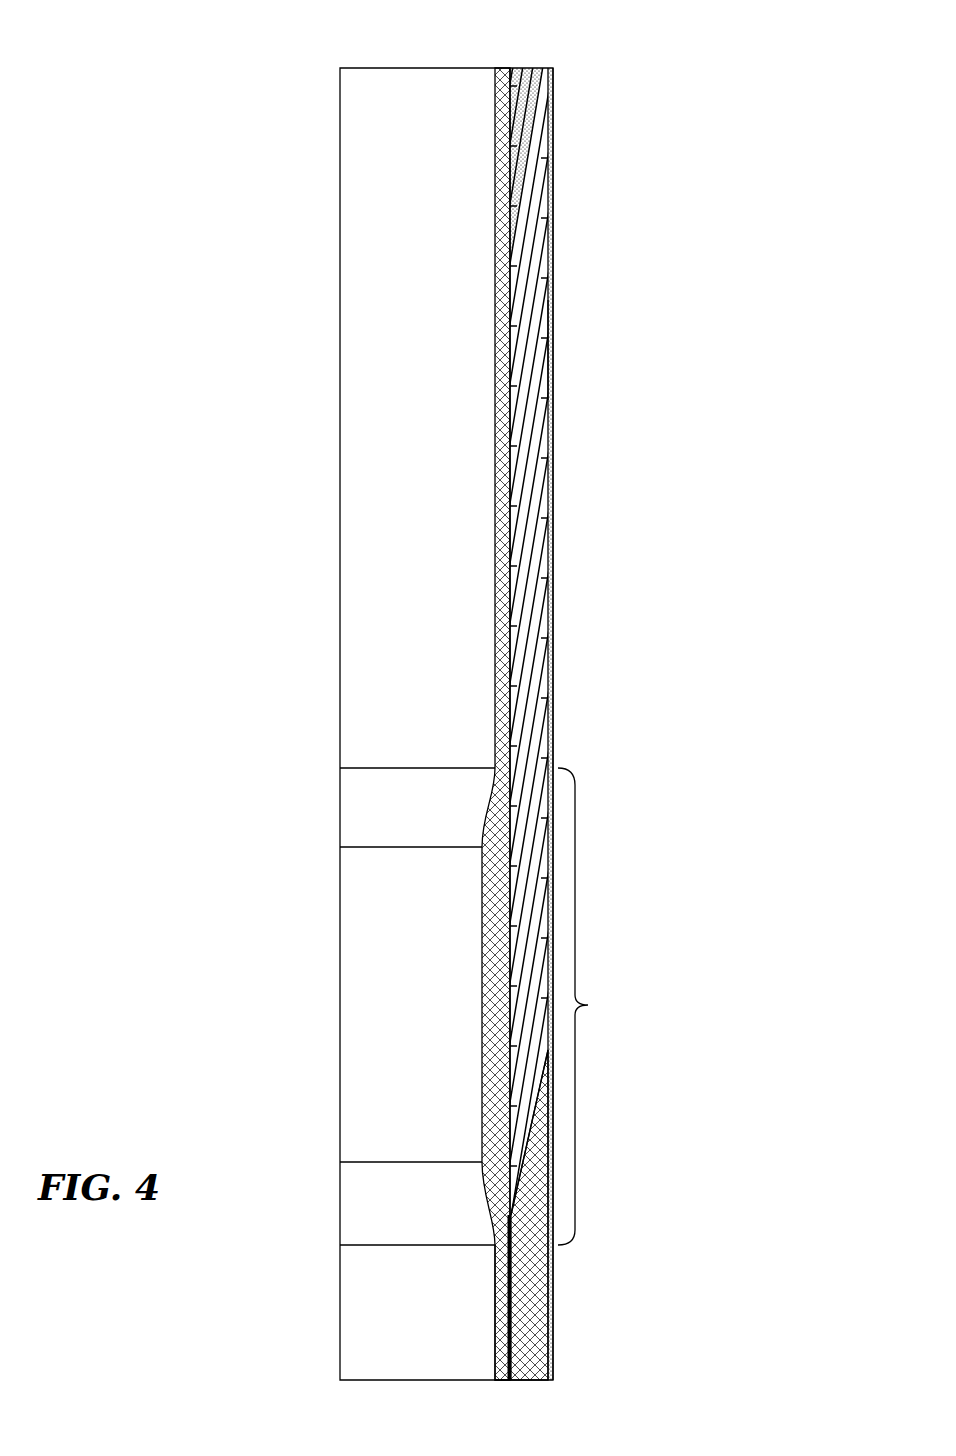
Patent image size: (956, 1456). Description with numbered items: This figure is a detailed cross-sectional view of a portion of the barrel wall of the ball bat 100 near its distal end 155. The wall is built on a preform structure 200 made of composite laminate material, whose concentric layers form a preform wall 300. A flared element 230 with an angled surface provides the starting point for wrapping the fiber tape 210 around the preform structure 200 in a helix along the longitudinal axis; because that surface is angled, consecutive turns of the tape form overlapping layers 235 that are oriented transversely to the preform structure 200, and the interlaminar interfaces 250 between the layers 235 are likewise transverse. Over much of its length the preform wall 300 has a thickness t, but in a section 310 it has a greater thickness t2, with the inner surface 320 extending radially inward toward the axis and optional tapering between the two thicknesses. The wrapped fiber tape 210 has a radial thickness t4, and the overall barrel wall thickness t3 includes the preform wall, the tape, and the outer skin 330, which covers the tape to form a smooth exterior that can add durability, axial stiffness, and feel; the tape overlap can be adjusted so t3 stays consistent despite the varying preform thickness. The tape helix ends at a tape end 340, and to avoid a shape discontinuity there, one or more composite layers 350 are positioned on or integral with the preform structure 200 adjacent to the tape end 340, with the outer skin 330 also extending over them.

The ball bat 100 is at (676, 165).
The distal end 155 is at (352, 54).
The preform structure 200 is at (497, 1295).
The fiber tape 210 is at (537, 232).
The flared element 230 is at (520, 68).
The layers 235 is at (535, 427).
The interlaminar interfaces 250 is at (533, 455).
The preform wall 300 is at (497, 68).
The section 310 is at (596, 1006).
The inner surface 320 is at (525, 690).
The outer skin 330 is at (549, 345).
The tape end 340 is at (502, 1214).
The composite layers 350 is at (552, 1267).
The thickness t is at (565, 1352).
The thickness t2 is at (560, 936).
The overall thickness t3 is at (432, 740).
The radial thickness t4 is at (455, 703).